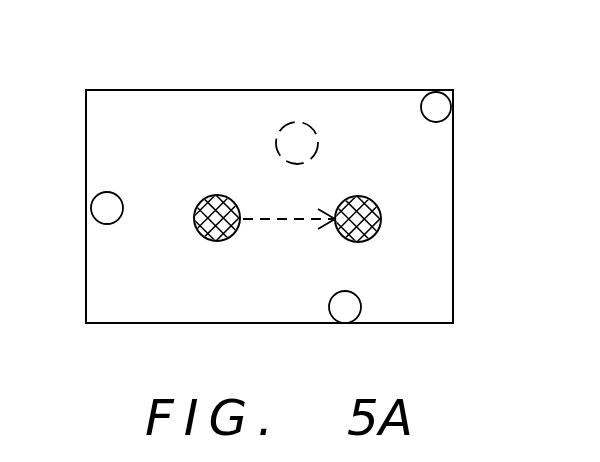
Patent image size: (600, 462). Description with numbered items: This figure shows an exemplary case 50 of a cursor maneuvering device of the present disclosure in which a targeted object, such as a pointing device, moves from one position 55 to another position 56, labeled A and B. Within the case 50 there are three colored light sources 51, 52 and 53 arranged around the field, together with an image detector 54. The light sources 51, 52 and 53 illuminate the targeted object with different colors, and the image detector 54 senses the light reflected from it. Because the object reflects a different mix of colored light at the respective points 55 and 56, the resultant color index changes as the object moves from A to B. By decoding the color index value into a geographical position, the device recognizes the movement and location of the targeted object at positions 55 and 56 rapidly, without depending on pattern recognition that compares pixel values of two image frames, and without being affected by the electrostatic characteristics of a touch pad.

The exemplary case 50 is at (193, 89).
The light source 51 is at (437, 122).
The light source 52 is at (331, 319).
The light source 53 is at (96, 221).
The image detector 54 is at (298, 121).
The position 55 is at (215, 241).
The position 56 is at (383, 222).